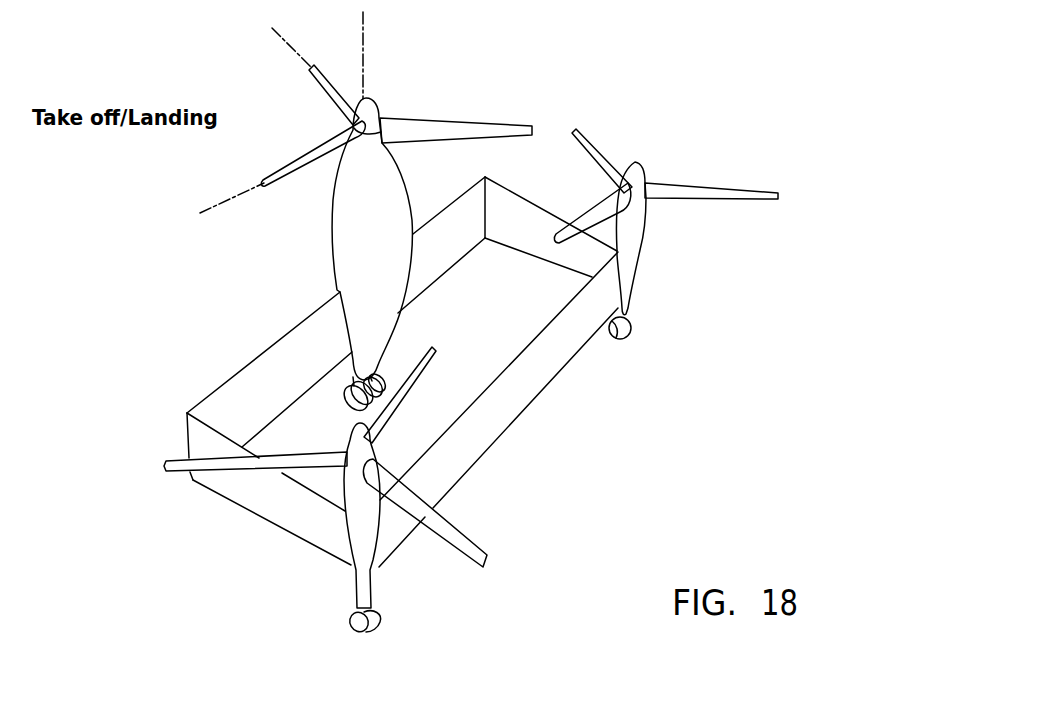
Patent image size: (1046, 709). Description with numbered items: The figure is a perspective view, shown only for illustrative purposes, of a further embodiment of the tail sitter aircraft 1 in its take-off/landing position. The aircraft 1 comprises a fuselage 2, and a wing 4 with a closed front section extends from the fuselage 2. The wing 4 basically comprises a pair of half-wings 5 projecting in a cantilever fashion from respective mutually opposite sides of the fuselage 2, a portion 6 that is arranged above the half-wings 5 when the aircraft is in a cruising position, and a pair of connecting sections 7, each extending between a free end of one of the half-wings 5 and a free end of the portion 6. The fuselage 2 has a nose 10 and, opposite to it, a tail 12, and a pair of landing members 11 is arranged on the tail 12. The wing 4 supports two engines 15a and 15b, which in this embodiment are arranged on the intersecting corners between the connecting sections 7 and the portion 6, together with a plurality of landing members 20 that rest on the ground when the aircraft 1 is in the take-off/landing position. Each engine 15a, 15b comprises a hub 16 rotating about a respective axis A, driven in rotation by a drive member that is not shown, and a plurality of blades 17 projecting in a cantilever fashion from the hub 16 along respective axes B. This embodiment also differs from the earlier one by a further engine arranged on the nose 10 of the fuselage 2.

The tail sitter aircraft 1 is at (760, 107).
The fuselage 2 is at (362, 233).
The wing 4 is at (568, 397).
The half-wings 5 is at (453, 250).
The portion 6 is at (493, 420).
The connecting sections 7 is at (545, 213).
The nose 10 is at (384, 158).
The landing members 11 is at (377, 373).
The tail 12 is at (380, 356).
The engine 15a is at (714, 241).
The engine 15b is at (435, 581).
The hub 16 is at (645, 175).
The blades 17 is at (602, 152).
The landing members 20 is at (631, 334).
The axis A is at (366, 18).
The axes B is at (262, 38).